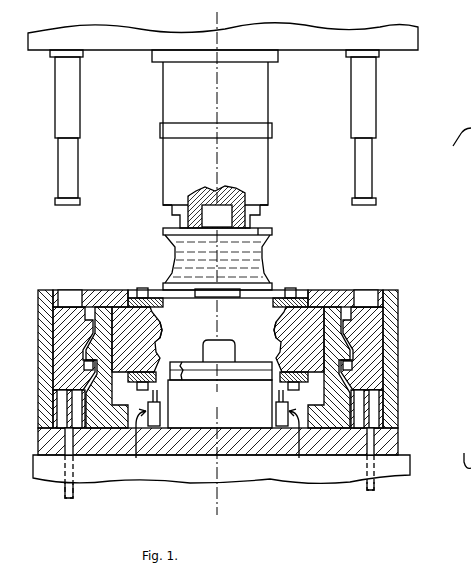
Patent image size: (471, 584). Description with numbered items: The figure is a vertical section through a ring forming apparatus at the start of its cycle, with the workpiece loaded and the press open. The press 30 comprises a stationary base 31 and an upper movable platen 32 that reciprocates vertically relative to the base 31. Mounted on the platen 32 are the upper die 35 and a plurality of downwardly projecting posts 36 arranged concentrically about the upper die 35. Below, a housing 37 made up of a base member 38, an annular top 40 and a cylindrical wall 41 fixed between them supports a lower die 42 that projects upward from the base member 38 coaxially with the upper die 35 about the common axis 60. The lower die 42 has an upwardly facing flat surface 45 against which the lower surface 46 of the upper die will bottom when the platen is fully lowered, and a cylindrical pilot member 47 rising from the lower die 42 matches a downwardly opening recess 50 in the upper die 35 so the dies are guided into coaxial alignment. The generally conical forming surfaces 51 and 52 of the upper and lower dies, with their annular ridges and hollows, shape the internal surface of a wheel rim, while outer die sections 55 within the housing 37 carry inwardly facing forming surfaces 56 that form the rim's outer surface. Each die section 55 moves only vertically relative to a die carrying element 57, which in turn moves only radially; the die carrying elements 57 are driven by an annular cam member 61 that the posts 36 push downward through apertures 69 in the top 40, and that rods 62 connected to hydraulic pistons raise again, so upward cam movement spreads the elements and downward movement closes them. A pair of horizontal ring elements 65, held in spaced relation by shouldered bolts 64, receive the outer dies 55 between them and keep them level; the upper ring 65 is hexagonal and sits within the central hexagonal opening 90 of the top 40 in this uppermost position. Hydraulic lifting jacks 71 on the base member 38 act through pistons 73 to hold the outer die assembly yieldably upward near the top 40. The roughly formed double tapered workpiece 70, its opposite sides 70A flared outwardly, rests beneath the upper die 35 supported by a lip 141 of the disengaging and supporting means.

The press 30 is at (228, 114).
The stationary base 31 is at (266, 470).
The upper movable platen 32 is at (302, 42).
The upper die 35 is at (263, 176).
The posts 36 is at (73, 171).
The housing 37 is at (235, 346).
The base member 38 is at (394, 441).
The annular top 40 is at (220, 279).
The cylindrical wall 41 is at (394, 340).
The lower die 42 is at (224, 406).
The flat surface 45 is at (221, 361).
The lower surface 46 is at (258, 231).
The pilot member 47 is at (218, 344).
The recess 50 is at (227, 224).
The forming surface 51 is at (173, 213).
The forming surface 52 is at (172, 366).
The outer die sections 55 is at (218, 339).
The inwardly facing forming surfaces 56 is at (162, 332).
The die carrying elements 57 is at (107, 415).
The axis 60 is at (217, 497).
The annular cam member 61 is at (76, 344).
The rods 62 is at (78, 495).
The shouldered bolts 64 is at (203, 277).
The horizontal ring elements 65 is at (297, 297).
The apertures 69 is at (70, 290).
The workpiece 70 is at (231, 252).
The opposite sides 70A is at (272, 233).
The hydraulic lifting jacks 71 is at (220, 444).
The pistons 73 is at (152, 398).
The central hexagonal opening 90 is at (287, 289).
The lip 141 is at (220, 289).